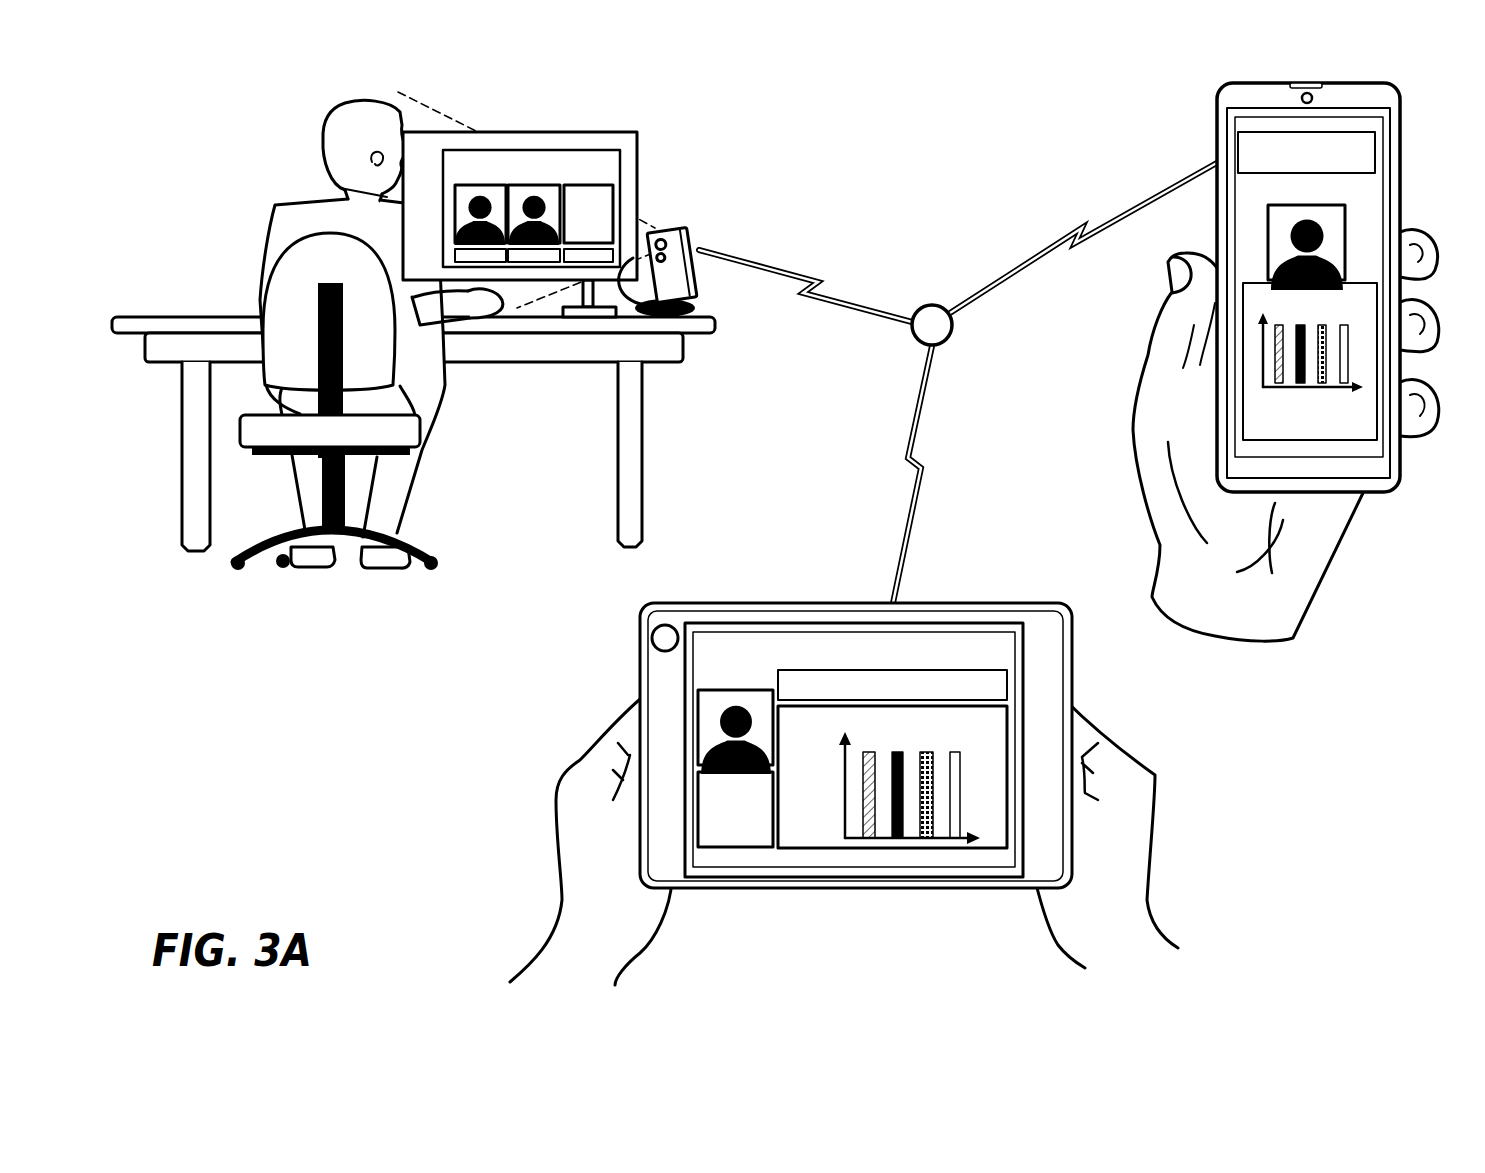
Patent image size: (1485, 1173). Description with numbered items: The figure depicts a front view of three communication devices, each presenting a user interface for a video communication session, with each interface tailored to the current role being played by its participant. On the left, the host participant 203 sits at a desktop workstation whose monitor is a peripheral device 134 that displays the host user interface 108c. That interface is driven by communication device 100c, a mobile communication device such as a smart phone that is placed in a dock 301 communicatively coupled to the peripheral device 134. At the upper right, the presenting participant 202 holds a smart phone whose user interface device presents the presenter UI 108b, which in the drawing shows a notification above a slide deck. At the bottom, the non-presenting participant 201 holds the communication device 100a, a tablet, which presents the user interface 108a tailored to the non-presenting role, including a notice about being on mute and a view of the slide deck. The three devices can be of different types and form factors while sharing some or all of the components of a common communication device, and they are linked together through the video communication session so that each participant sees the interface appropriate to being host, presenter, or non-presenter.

The host participant 203 is at (290, 195).
The peripheral device 134 is at (563, 132).
The user interface 108c is at (531, 208).
The communication device 100c is at (700, 232).
The dock 301 is at (704, 318).
The presenter UI 108b is at (1378, 218).
The presenting participant 202 is at (1140, 472).
The communication device 100a is at (640, 608).
The user interface 108a is at (854, 750).
The non-presenting participant 201 is at (580, 762).